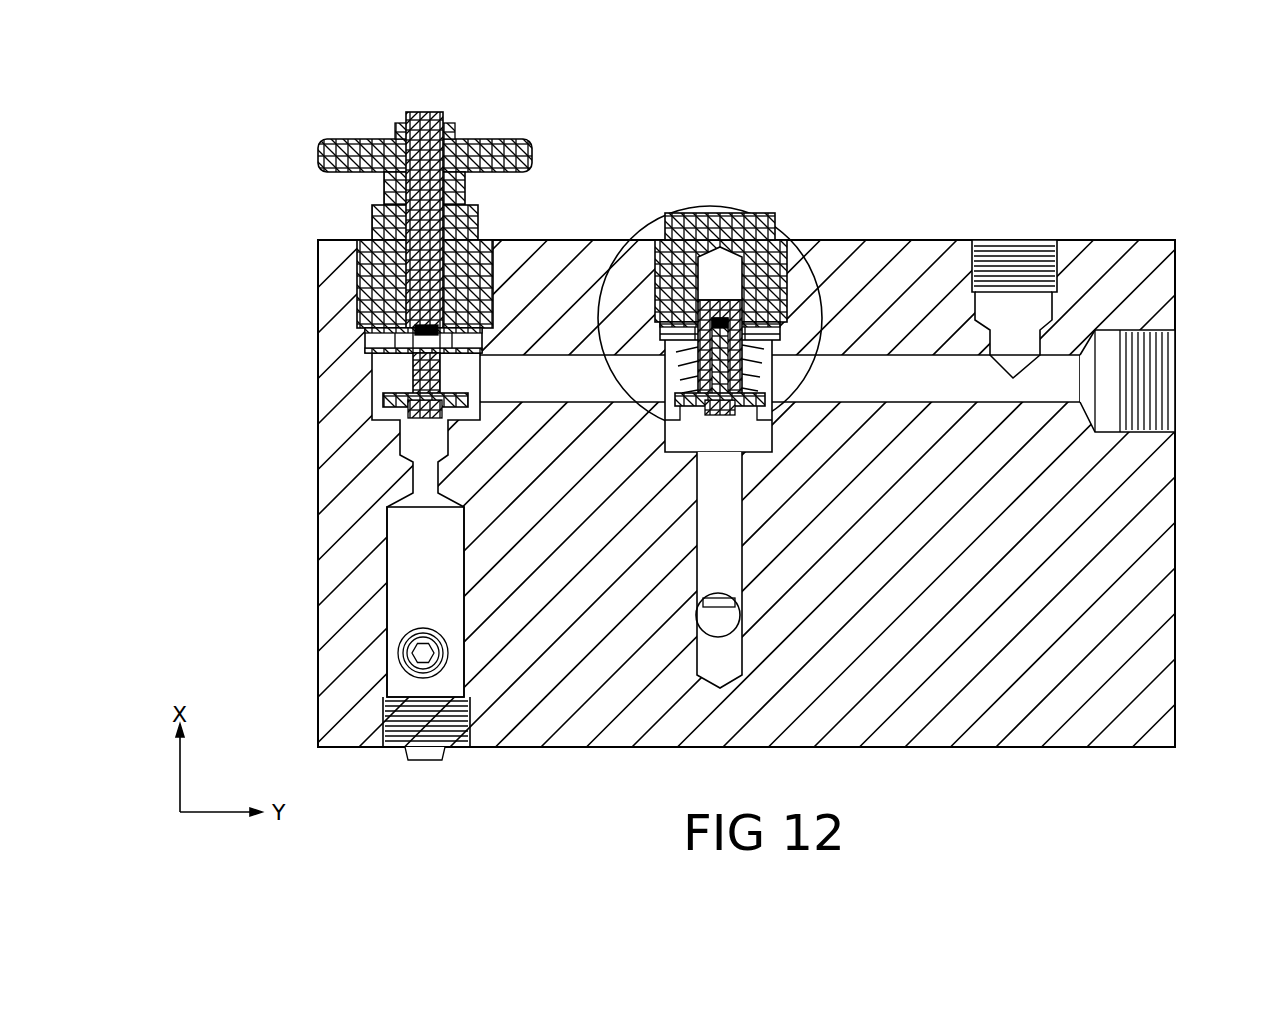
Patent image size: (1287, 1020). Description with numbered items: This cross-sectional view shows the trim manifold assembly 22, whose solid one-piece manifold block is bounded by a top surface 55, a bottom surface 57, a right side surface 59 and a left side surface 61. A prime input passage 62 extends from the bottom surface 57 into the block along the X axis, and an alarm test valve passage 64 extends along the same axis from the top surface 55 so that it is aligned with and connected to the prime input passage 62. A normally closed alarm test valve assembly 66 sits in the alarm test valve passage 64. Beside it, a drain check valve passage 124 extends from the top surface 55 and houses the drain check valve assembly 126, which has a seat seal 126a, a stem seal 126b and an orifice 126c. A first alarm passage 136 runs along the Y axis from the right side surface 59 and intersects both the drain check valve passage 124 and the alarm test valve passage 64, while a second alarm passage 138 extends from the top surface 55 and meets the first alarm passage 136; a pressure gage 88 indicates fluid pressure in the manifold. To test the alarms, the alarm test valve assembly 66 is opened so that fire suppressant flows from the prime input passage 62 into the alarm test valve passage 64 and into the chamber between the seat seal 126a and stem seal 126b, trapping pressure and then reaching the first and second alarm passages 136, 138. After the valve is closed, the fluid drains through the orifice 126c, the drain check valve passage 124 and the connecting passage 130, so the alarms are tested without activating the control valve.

The trim manifold assembly 22 is at (1181, 158).
The top surface 55 is at (1172, 247).
The bottom surface 57 is at (1075, 752).
The right side surface 59 is at (1178, 628).
The left side surface 61 is at (318, 330).
The prime input passage 62 is at (408, 578).
The alarm test valve passage 64 is at (382, 365).
The alarm test valve assembly 66 is at (299, 118).
The pressure gage 88 is at (655, 228).
The drain check valve passage 124 is at (730, 567).
The drain check valve assembly 126 is at (740, 441).
The seat seal 126a is at (612, 240).
The stem seal 126b is at (790, 300).
The orifice 126c is at (707, 433).
The connecting passage 130 is at (720, 618).
The first alarm passage 136 is at (810, 370).
The second alarm passage 138 is at (1027, 345).